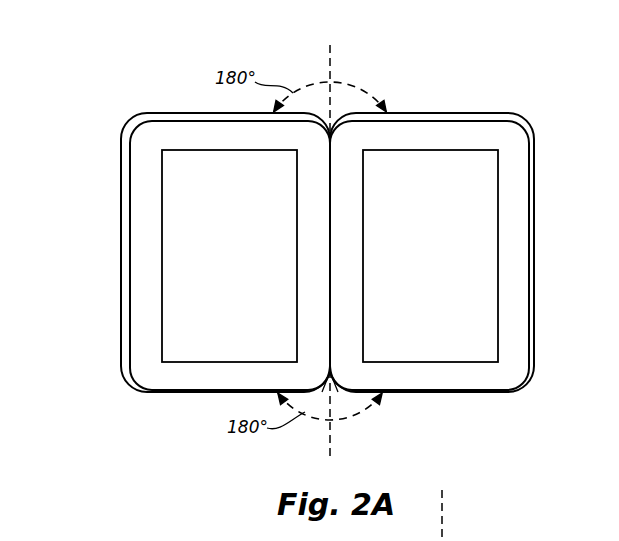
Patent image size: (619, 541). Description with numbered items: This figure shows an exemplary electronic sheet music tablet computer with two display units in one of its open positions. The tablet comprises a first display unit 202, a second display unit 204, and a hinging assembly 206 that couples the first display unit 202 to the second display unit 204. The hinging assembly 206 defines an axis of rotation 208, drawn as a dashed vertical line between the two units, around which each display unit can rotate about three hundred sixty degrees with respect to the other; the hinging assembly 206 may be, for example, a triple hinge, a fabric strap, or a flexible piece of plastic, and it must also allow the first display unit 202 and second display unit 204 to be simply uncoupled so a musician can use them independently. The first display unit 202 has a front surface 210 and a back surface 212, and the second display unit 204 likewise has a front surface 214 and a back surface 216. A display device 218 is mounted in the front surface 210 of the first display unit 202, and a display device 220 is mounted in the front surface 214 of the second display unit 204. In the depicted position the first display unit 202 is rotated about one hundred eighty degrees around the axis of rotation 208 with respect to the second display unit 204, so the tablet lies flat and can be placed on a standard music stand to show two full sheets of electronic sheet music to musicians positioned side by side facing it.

The first display unit 202 is at (188, 257).
The second display unit 204 is at (470, 260).
The hinging assembly 206 is at (334, 395).
The axis of rotation 208 is at (333, 62).
The front surface 210 is at (145, 298).
The back surface 212 is at (200, 113).
The front surface 214 is at (510, 298).
The back surface 216 is at (455, 113).
The display device 218 is at (245, 266).
The display device 220 is at (449, 266).